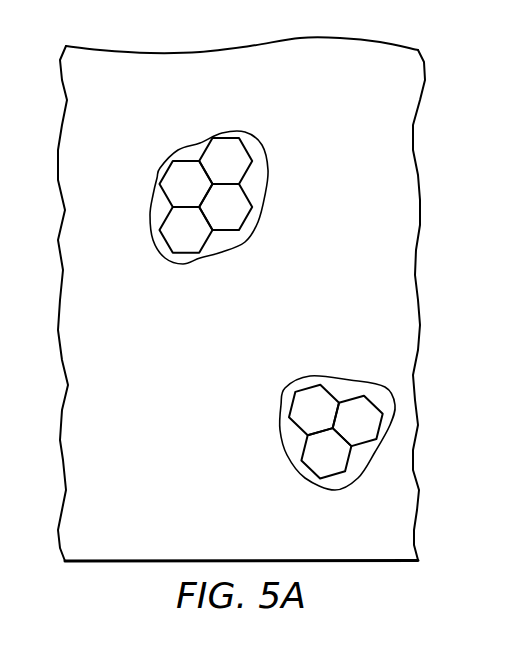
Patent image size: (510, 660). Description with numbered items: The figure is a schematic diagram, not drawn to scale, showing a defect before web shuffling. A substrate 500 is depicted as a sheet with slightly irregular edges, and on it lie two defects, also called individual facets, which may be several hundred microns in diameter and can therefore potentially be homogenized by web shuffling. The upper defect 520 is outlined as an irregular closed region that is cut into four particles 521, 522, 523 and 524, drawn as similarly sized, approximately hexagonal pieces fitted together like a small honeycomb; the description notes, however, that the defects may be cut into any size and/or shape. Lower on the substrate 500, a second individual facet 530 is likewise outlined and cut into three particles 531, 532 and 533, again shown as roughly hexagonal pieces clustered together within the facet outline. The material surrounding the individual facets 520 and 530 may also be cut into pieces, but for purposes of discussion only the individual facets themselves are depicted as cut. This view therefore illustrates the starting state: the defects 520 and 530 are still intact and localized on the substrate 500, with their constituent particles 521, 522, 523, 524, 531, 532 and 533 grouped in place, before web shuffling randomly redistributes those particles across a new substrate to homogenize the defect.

The substrate 500 is at (140, 52).
The defect 520 is at (157, 212).
The particle 521 is at (186, 167).
The particle 522 is at (238, 156).
The particle 523 is at (237, 213).
The particle 524 is at (190, 246).
The individual facet 530 is at (327, 492).
The particle 531 is at (308, 392).
The particle 532 is at (350, 403).
The particle 533 is at (310, 462).